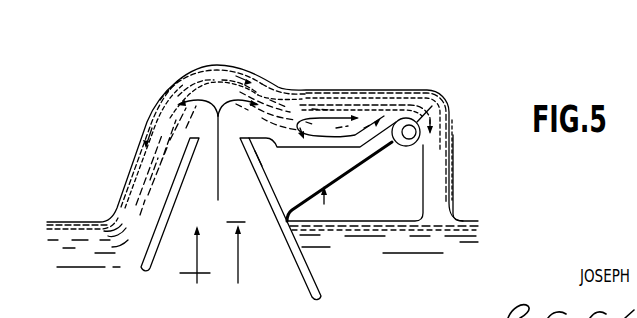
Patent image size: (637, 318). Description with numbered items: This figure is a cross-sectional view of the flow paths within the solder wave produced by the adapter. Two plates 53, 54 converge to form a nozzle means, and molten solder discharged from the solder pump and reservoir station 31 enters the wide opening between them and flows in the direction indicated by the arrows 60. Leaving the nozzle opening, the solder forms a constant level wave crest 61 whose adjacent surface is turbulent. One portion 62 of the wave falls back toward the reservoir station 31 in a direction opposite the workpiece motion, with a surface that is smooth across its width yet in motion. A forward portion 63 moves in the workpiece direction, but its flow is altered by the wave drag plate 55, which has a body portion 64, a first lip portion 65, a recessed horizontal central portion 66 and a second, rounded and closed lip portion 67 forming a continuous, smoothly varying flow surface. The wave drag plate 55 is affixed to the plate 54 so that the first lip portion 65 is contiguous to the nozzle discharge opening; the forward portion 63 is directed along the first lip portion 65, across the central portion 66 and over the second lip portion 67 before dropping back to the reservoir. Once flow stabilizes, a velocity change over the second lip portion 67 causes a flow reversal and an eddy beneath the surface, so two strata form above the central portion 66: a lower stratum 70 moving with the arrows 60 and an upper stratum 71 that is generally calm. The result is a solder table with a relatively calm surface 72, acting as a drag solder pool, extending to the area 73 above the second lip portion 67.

The solder pump and reservoir station 31 is at (53, 268).
The plate 53 is at (145, 272).
The plate 54 is at (260, 287).
The wave drag plate 55 is at (324, 203).
The arrows 60 is at (219, 146).
The wave crest 61 is at (216, 64).
The portion 62 is at (147, 117).
The forward portion 63 is at (268, 83).
The body portion 64 is at (343, 163).
The first lip portion 65 is at (268, 165).
The recessed horizontal central portion 66 is at (309, 148).
The second lip portion 67 is at (388, 146).
The lower stratum 70 is at (380, 113).
The upper molten solder stratum 71 is at (343, 90).
The calm surface 72 is at (368, 90).
The area above second lip portion 73 is at (433, 103).